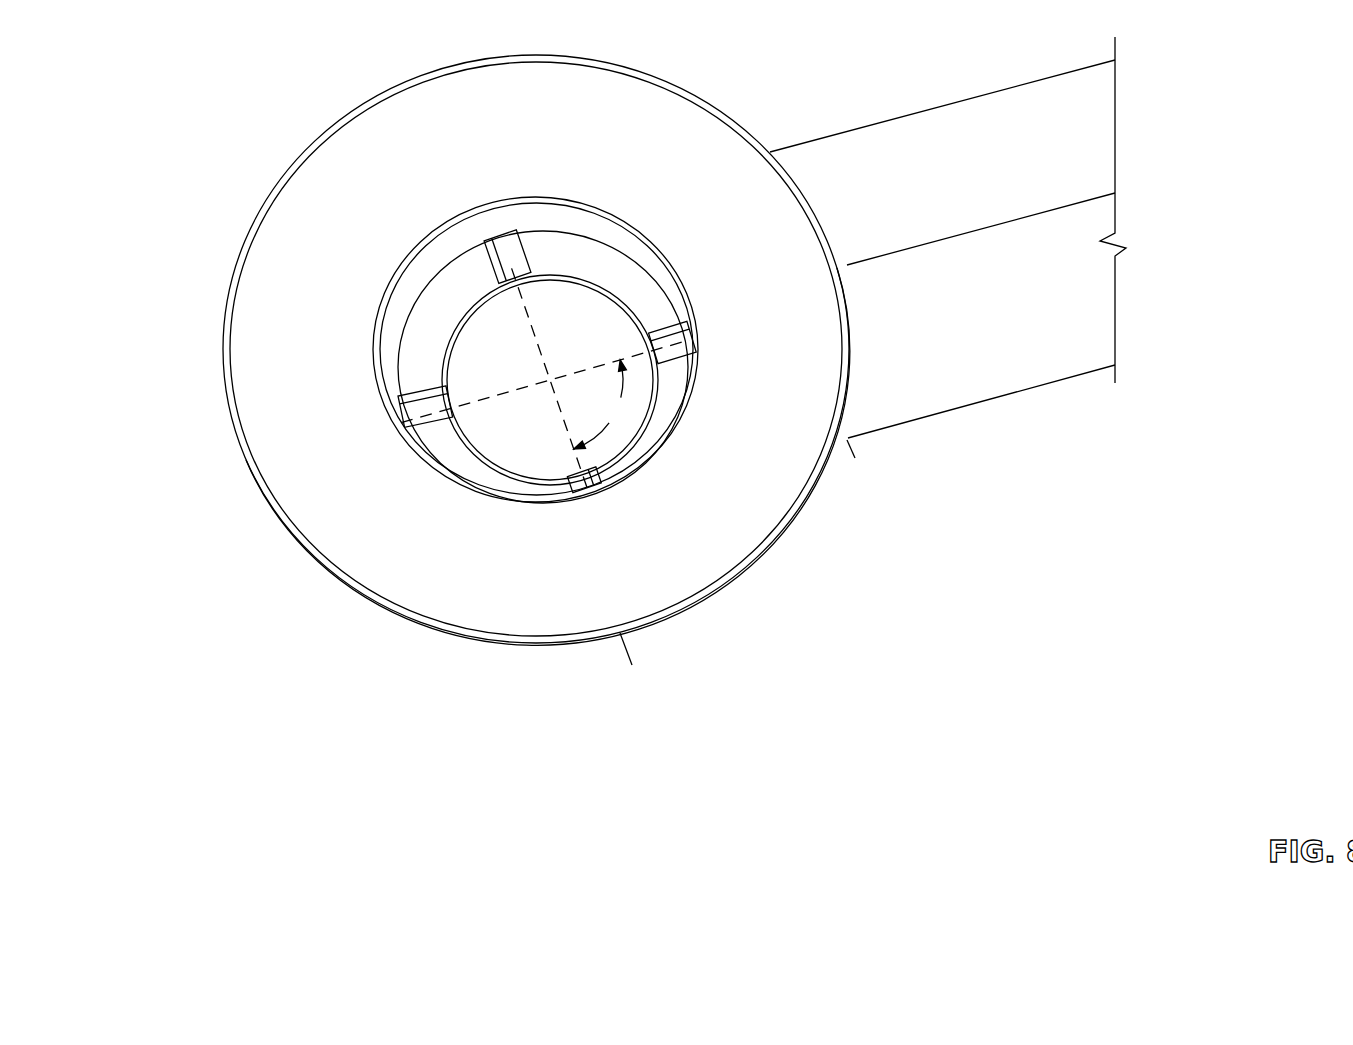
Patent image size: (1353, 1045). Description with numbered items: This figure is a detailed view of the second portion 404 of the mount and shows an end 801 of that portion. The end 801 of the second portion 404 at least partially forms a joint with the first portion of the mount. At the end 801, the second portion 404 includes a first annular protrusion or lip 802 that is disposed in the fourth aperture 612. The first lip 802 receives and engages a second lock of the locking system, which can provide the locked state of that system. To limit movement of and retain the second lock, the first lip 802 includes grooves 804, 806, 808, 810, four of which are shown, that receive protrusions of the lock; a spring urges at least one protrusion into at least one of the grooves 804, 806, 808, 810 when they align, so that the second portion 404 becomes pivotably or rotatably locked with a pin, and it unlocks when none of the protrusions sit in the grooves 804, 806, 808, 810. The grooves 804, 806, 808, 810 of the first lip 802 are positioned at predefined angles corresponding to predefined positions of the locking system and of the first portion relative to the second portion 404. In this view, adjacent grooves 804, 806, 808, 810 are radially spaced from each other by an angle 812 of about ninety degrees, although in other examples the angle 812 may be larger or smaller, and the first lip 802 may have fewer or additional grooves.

The end 801 is at (227, 306).
The second portion 404 is at (987, 337).
The fourth aperture 612 is at (616, 222).
The first annular protrusion or lip 802 is at (612, 290).
The groove 804 is at (409, 393).
The groove 806 is at (526, 245).
The groove 808 is at (670, 322).
The groove 810 is at (575, 478).
The angle 812 is at (627, 414).